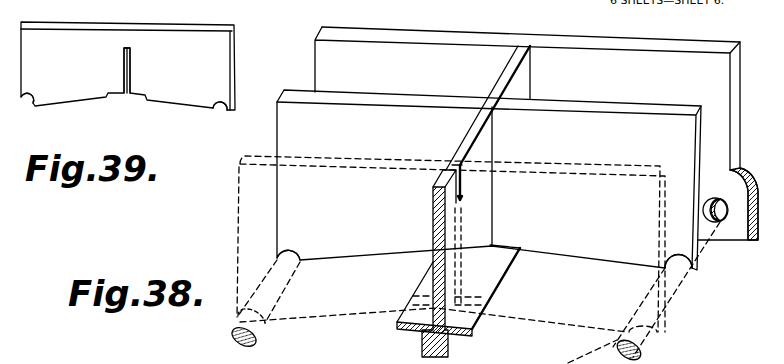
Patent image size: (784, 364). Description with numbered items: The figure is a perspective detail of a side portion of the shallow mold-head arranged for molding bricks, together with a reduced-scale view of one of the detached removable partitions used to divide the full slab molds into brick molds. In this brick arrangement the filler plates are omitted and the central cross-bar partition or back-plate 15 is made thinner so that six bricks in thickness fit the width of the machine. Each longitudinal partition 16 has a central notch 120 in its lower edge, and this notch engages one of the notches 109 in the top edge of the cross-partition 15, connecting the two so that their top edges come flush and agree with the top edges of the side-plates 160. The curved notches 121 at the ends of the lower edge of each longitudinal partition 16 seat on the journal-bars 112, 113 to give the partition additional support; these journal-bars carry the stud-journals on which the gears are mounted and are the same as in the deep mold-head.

In FIG. 38, the central cross-bar partition 15 is at (433, 230).
In FIG. 39, the longitudinal partition 16 is at (128, 66).
In FIG. 38, the longitudinal partition 16 is at (489, 180).
In FIG. 38, the notch 109 is at (463, 192).
In FIG. 38, the journal-bar 112 is at (643, 306).
In FIG. 38, the journal-bar 113 is at (272, 293).
In FIG. 39, the central notch 120 is at (131, 78).
In FIG. 39, the curved notch 121 is at (217, 121).
In FIG. 38, the curved notch 121 is at (668, 260).
In FIG. 38, the side-plate 160 is at (497, 195).